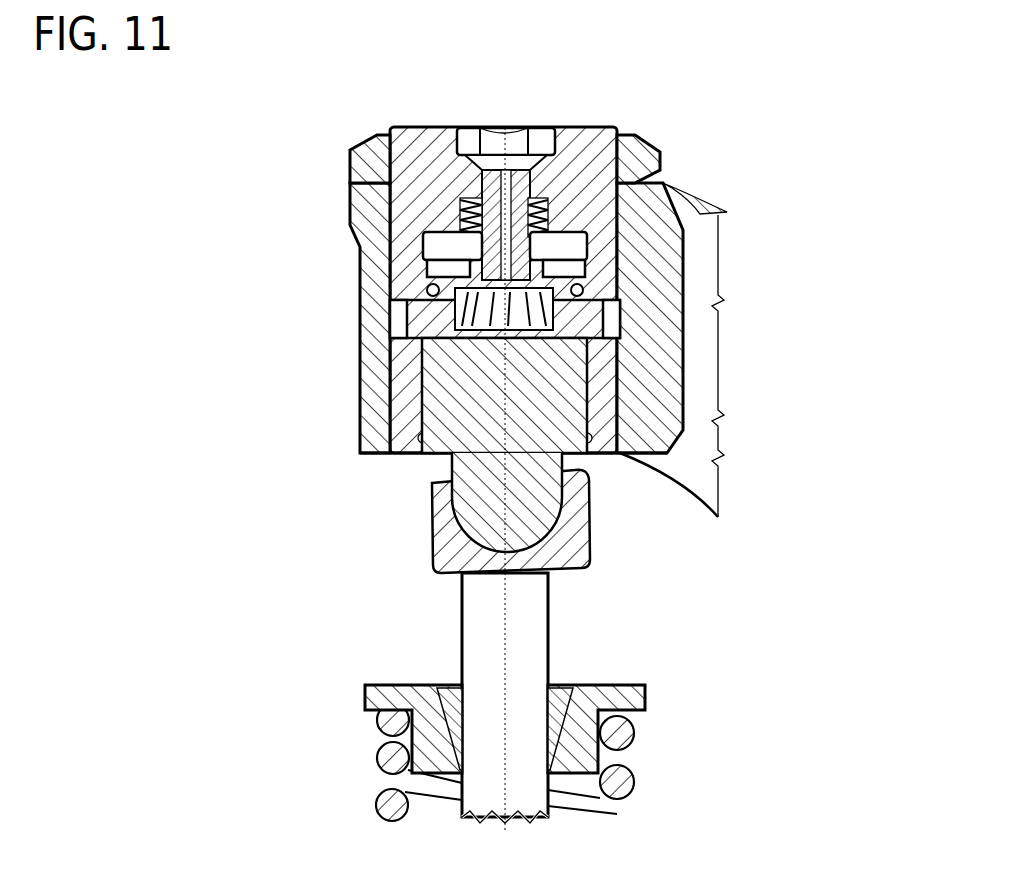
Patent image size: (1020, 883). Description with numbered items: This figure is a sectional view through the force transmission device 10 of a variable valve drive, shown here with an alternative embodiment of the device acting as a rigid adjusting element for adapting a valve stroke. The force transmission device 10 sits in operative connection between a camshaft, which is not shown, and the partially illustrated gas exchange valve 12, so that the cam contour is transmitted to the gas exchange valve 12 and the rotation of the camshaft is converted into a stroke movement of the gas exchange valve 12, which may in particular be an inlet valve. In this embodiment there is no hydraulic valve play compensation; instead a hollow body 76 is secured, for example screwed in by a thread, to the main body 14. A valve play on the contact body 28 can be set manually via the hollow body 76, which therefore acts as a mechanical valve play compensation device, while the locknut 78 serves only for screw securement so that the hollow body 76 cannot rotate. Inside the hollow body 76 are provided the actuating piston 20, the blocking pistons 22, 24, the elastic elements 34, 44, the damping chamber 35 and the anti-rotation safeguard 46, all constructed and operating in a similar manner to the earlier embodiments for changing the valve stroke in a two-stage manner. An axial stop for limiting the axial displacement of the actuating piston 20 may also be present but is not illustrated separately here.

The force transmission device 10 is at (826, 163).
The gas exchange valve 12 is at (548, 655).
The main body 14 is at (700, 206).
The actuating piston 20 is at (480, 182).
The blocking piston 22 is at (407, 318).
The blocking piston 24 is at (686, 352).
The contact body 28 is at (618, 520).
The elastic element 34 is at (462, 215).
The damping chamber 35 is at (640, 268).
The elastic element 44 is at (374, 360).
The anti-rotation safeguard 46 is at (610, 312).
The hollow body 76 is at (606, 127).
The locknut 78 is at (660, 158).